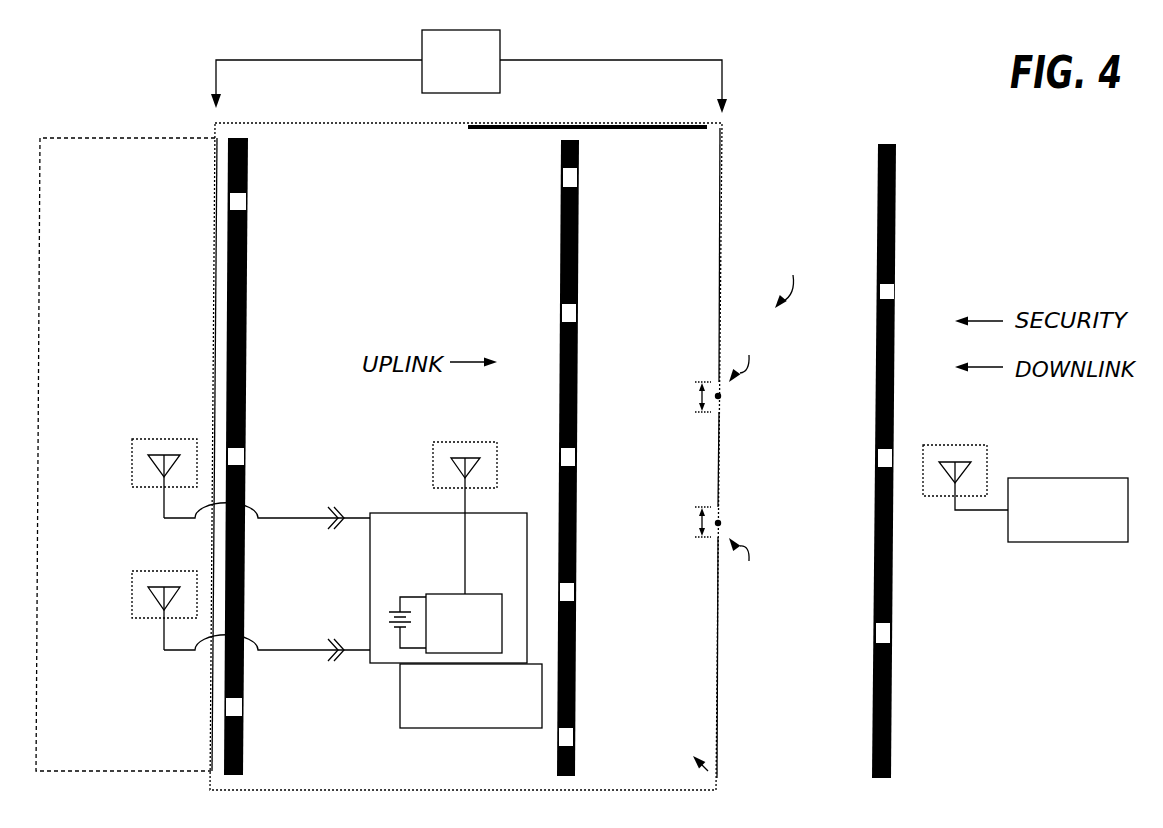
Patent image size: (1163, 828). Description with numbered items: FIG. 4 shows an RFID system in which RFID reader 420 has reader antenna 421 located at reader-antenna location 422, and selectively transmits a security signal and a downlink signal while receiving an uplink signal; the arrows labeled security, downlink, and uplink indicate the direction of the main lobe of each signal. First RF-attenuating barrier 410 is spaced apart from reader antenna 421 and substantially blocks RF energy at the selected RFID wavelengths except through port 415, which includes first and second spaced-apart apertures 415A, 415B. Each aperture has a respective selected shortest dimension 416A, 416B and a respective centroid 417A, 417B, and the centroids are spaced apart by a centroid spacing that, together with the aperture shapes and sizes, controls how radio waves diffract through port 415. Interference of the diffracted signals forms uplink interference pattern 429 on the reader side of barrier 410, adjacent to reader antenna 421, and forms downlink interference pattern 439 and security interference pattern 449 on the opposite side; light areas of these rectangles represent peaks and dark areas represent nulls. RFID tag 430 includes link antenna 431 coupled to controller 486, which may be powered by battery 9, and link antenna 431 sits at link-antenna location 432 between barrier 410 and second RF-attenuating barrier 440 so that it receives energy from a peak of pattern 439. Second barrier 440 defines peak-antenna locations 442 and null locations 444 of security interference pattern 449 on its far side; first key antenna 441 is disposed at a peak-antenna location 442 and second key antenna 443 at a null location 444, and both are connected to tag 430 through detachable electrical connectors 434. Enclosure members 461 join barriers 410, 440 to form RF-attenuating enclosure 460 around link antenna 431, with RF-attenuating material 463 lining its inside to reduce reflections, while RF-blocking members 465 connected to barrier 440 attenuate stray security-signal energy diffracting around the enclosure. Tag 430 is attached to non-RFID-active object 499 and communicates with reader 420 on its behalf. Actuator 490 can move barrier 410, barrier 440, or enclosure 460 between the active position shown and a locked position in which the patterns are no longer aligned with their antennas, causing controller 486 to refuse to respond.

The battery 9 is at (392, 598).
The first RF-attenuating barrier 410 is at (720, 190).
The port 415 is at (794, 278).
The first aperture 415A is at (749, 355).
The second aperture 415B is at (749, 563).
The selected shortest dimension of first aperture 416A is at (697, 397).
The selected shortest dimension of second aperture 416B is at (697, 523).
The centroid of first aperture 417A is at (721, 396).
The centroid of second aperture 417B is at (721, 523).
The RFID reader 420 is at (1100, 478).
The reader antenna 421 is at (972, 462).
The reader-antenna location 422 is at (950, 444).
The uplink interference pattern 429 is at (882, 780).
The RFID tag 430 is at (370, 630).
The link antenna 431 is at (480, 459).
The link-antenna location 432 is at (460, 438).
The detachable electrical connectors 434 is at (337, 513).
The downlink interference pattern 439 is at (567, 778).
The second RF-attenuating barrier 440 is at (217, 187).
The first key antenna 441 is at (148, 462).
The peak-antenna location 442 is at (177, 438).
The second key antenna 443 is at (148, 593).
The null location 444 is at (177, 570).
The security interference pattern 449 is at (233, 777).
The RF-attenuating enclosure 460 is at (717, 769).
The enclosure member 461 is at (410, 126).
The RF-attenuating material 463 is at (496, 129).
The RF-blocking member 465 is at (115, 773).
The controller 486 is at (438, 594).
The actuator 490 is at (422, 45).
The non-RFID-active object 499 is at (465, 730).